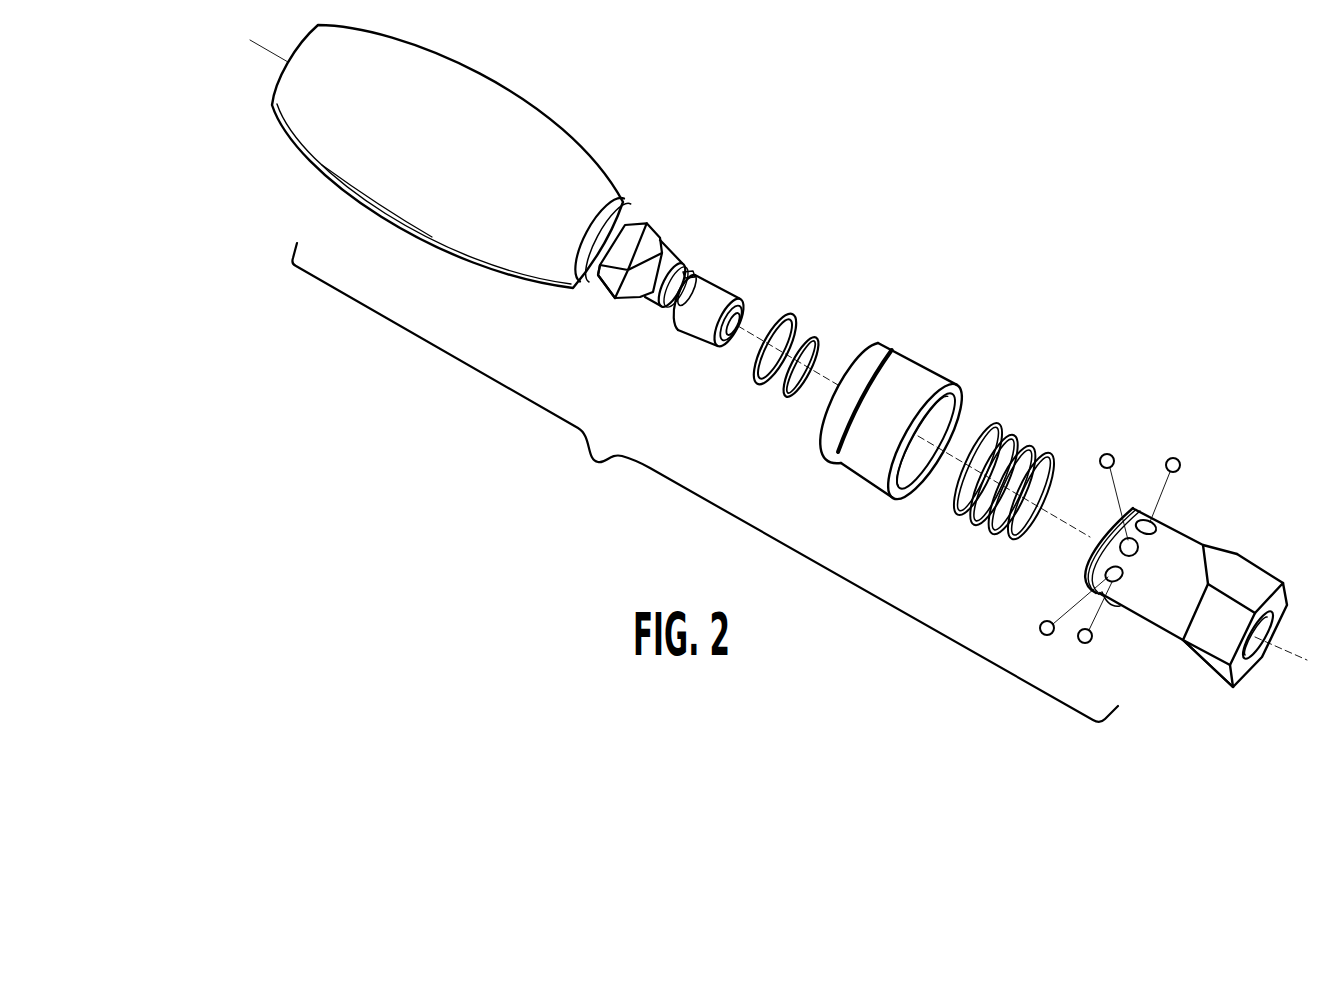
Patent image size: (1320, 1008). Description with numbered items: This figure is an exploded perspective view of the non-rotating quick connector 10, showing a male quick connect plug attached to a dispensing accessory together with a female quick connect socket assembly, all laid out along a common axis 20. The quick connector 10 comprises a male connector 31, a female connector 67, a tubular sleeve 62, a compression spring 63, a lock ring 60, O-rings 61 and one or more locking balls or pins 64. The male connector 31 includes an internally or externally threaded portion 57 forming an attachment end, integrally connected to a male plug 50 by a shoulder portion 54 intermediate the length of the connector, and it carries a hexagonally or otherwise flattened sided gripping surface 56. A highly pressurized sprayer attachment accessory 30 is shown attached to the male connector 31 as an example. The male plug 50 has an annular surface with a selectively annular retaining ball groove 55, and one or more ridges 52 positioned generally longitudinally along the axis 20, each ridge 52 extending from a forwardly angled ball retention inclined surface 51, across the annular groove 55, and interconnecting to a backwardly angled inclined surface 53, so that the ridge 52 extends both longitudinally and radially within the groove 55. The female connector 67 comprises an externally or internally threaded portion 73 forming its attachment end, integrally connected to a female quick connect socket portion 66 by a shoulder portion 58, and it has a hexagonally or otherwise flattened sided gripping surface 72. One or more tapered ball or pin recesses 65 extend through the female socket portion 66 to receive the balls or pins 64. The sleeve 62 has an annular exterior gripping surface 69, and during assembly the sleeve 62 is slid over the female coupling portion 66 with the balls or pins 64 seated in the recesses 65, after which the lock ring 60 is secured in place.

The non-rotating quick connector 10 is at (1078, 333).
The axis 20 is at (1298, 657).
The highly pressurized sprayer attachment accessory 30 is at (552, 148).
The male connector 31 is at (670, 312).
The male plug 50 is at (712, 292).
The forwardly angled ball retention inclined surface 51 is at (684, 326).
The ridge 52 is at (691, 273).
The backwardly angled inclined surface 53 is at (652, 306).
The shoulder portion 54 is at (618, 298).
The annular retaining ball groove 55 is at (676, 311).
The gripping surface 56 is at (653, 238).
The threaded portion 57 is at (616, 221).
The shoulder portion 58 is at (1220, 609).
The lock ring 60 is at (772, 326).
The O-rings 61 is at (815, 343).
The tubular sleeve 62 is at (904, 415).
The compression spring 63 is at (1016, 426).
The locking balls or pins 64 is at (1170, 460).
The tapered ball or pin recesses 65 is at (1154, 530).
The female quick connect socket portion 66 is at (1145, 594).
The female connector 67 is at (1176, 547).
The annular exterior gripping surface 69 is at (880, 349).
The gripping surface 72 is at (1198, 661).
The threaded portion 73 is at (1259, 647).